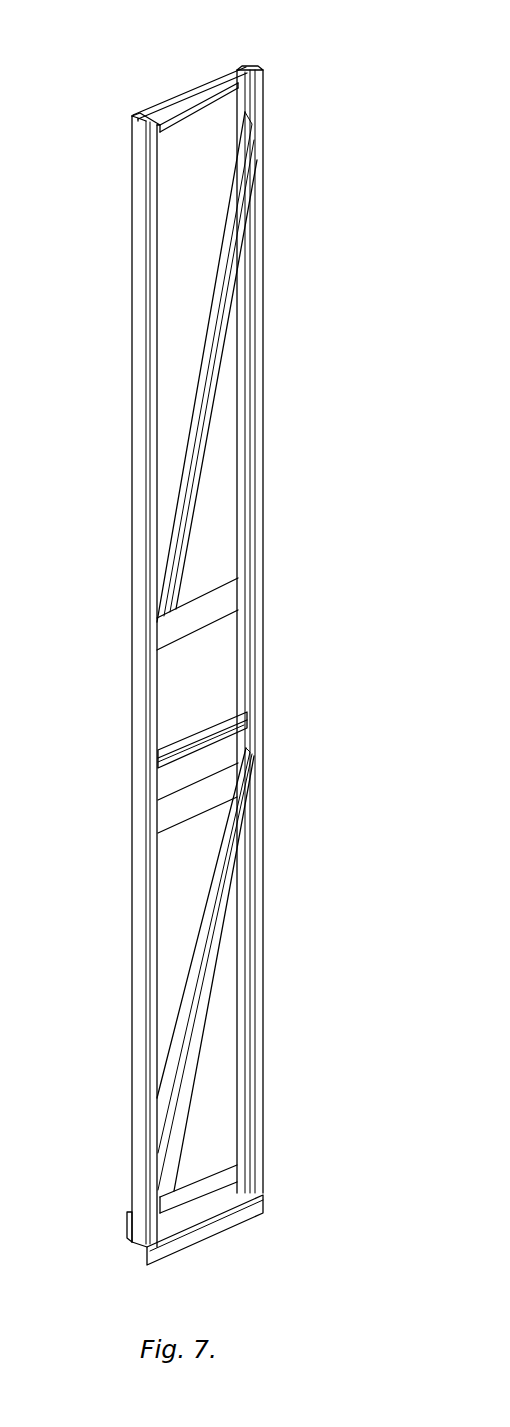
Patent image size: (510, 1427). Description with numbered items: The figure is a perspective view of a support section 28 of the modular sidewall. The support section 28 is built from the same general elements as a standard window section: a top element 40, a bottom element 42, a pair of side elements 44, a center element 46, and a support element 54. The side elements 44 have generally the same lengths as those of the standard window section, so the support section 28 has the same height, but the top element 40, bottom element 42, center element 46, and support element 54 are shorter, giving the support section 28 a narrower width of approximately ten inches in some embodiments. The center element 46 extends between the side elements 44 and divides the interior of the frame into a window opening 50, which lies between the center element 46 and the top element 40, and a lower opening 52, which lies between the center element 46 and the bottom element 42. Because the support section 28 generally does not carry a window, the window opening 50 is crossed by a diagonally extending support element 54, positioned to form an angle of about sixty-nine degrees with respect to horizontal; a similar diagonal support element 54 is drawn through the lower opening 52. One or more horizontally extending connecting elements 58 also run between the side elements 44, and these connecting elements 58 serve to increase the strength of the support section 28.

The support section 28 is at (147, 73).
The top element 40 is at (226, 82).
The bottom element 42 is at (232, 1222).
The side elements 44 is at (136, 490).
The center element 46 is at (195, 735).
The window opening 50 is at (220, 166).
The lower opening 52 is at (216, 836).
The support element 54 is at (206, 345).
The connecting elements 58 is at (218, 608).